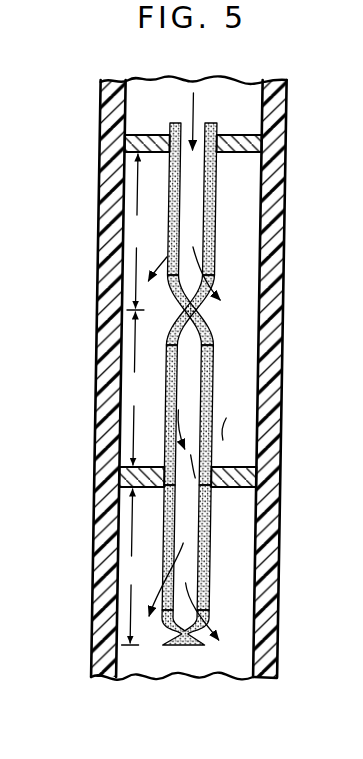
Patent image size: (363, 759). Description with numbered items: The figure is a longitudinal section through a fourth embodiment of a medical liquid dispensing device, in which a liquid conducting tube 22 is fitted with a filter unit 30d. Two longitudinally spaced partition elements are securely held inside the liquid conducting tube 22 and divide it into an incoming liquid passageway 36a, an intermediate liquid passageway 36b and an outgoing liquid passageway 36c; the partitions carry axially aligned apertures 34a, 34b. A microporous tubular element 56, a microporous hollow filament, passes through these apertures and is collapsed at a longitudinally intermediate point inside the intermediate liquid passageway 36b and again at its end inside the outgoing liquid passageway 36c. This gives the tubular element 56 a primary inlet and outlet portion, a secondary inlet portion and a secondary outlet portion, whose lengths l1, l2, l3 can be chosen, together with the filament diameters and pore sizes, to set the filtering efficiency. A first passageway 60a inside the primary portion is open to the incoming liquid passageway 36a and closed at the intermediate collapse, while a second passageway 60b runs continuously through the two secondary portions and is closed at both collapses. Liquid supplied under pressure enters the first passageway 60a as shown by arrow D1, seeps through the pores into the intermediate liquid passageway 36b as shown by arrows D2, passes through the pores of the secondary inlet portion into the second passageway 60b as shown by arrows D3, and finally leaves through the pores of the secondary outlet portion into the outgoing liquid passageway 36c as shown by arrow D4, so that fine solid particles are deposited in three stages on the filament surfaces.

The liquid conducting tube 22 is at (99, 139).
The filter unit 30d is at (238, 648).
The aperture 34a is at (229, 118).
The aperture 34b is at (222, 482).
The incoming liquid passageway 36a is at (214, 99).
The intermediate liquid passageway 36b is at (240, 362).
The outgoing liquid passageway 36c is at (240, 585).
The microporous tubular element 56 is at (214, 386).
The first passageway 60a is at (115, 309).
The second passageway 60b is at (114, 567).
The arrow D1 is at (165, 121).
The arrows D2 is at (208, 291).
The arrows D3 is at (164, 431).
The arrow D4 is at (226, 623).
The length l1 is at (137, 232).
The length l2 is at (132, 388).
The length l3 is at (130, 567).